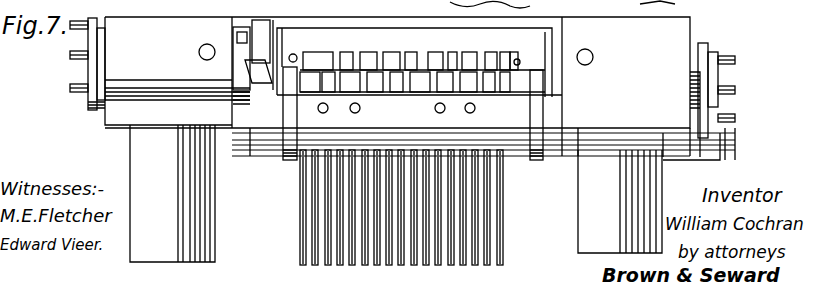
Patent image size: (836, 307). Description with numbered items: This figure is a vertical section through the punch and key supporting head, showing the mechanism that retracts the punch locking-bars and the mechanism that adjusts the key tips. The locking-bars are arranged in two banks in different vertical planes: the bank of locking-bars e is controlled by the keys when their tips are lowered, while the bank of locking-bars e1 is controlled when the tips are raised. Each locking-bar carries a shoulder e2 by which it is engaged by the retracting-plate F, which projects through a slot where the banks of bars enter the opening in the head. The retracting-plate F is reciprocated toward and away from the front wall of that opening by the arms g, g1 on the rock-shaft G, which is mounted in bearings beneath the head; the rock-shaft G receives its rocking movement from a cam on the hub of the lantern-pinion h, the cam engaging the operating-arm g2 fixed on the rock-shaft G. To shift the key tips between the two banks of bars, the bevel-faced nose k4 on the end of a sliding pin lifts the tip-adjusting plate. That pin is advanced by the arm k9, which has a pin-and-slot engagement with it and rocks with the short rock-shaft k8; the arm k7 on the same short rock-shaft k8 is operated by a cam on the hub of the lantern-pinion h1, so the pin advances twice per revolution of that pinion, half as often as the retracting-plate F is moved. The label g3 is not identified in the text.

The lantern-pinion h1 is at (100, 55).
The arm k7 is at (100, 62).
The short rock-shaft k8 is at (146, 87).
The arm k9 is at (242, 52).
The bevel-faced nose k4 is at (265, 86).
The retracting-plate F is at (414, 61).
The shoulder e2 is at (422, 48).
The locking-bar e is at (492, 78).
The locking-bar e1 is at (497, 60).
The arm g1 is at (288, 115).
The arm g is at (537, 113).
The rock-shaft G is at (593, 150).
The operating-arm g2 is at (707, 50).
The lantern-pinion h is at (707, 80).
The bar g3 is at (482, 62).